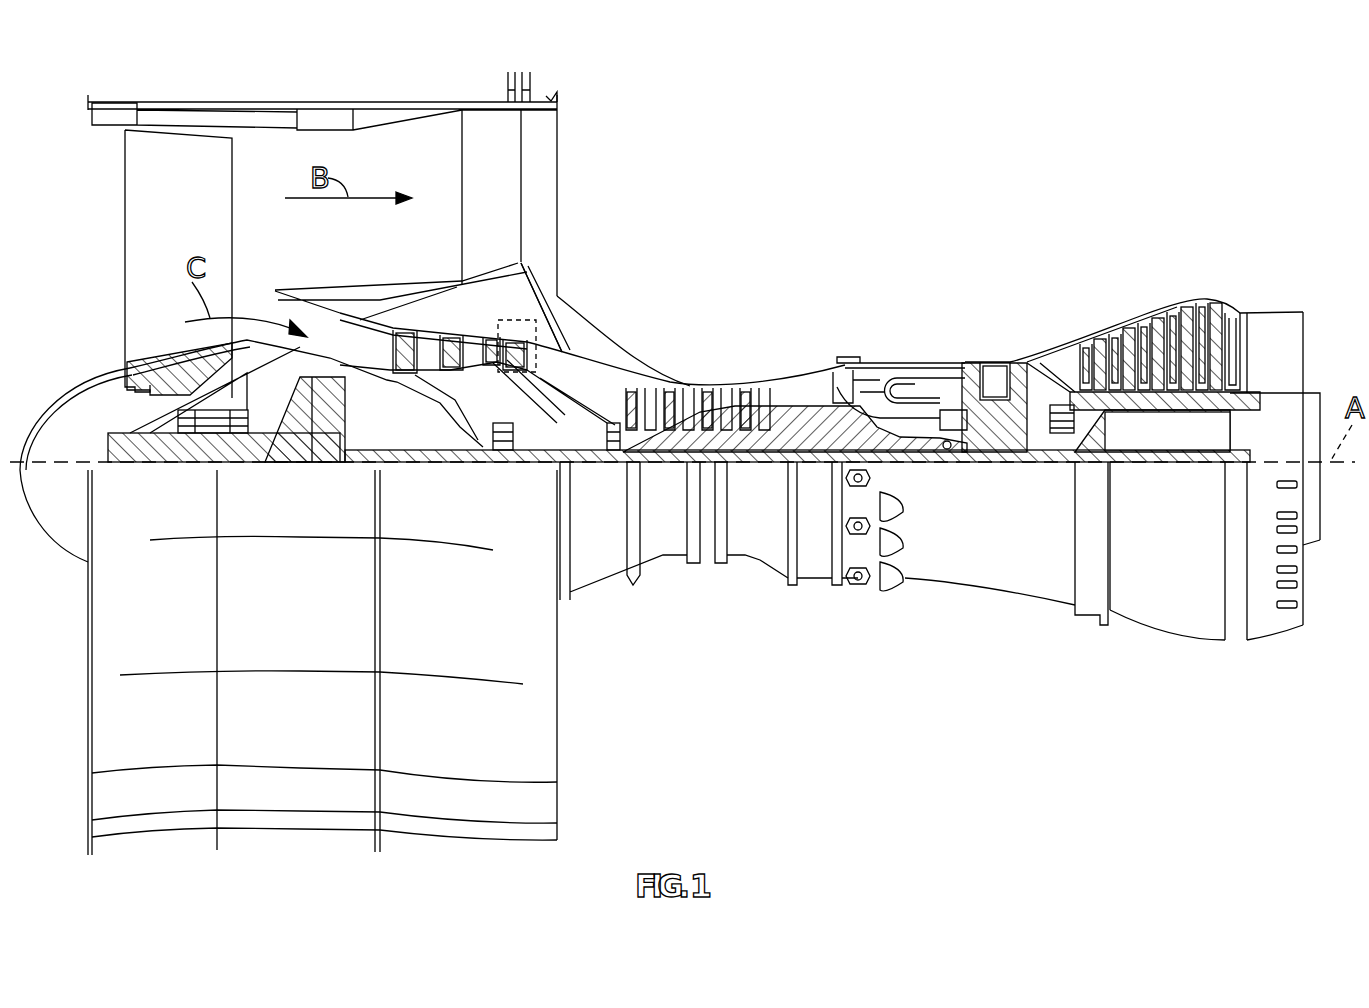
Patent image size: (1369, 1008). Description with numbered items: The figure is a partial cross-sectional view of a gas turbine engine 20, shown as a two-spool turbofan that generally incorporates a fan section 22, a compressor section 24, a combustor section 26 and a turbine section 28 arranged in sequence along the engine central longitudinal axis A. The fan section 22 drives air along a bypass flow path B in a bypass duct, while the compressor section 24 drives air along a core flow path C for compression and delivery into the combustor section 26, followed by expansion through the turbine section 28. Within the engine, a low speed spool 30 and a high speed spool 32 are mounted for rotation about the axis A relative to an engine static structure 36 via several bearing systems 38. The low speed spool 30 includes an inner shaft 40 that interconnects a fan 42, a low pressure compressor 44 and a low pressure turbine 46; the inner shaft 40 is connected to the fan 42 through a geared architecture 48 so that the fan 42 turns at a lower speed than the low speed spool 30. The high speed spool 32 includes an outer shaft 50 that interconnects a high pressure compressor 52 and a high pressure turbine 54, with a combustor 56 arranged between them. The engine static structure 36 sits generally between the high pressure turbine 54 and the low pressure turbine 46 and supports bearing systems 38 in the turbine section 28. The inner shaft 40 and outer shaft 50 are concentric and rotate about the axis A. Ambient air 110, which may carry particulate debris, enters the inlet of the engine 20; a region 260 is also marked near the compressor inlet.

The gas turbine engine 20 is at (1190, 68).
The fan section 22 is at (183, 98).
The compressor section 24 is at (795, 338).
The combustor section 26 is at (902, 320).
The turbine section 28 is at (1134, 323).
The low speed spool 30 is at (775, 470).
The high speed spool 32 is at (833, 420).
The engine static structure 36 is at (814, 592).
The bearing systems 38 is at (213, 433).
The inner shaft 40 is at (612, 450).
The fan 42 is at (188, 200).
The low pressure compressor 44 is at (483, 327).
The low pressure turbine 46 is at (1158, 322).
The geared architecture 48 is at (320, 432).
The outer shaft 50 is at (962, 445).
The high pressure compressor 52 is at (737, 433).
The high pressure turbine 54 is at (1000, 370).
The combustor 56 is at (910, 387).
The ambient air 110 is at (472, 348).
The inlet region 260 is at (537, 338).